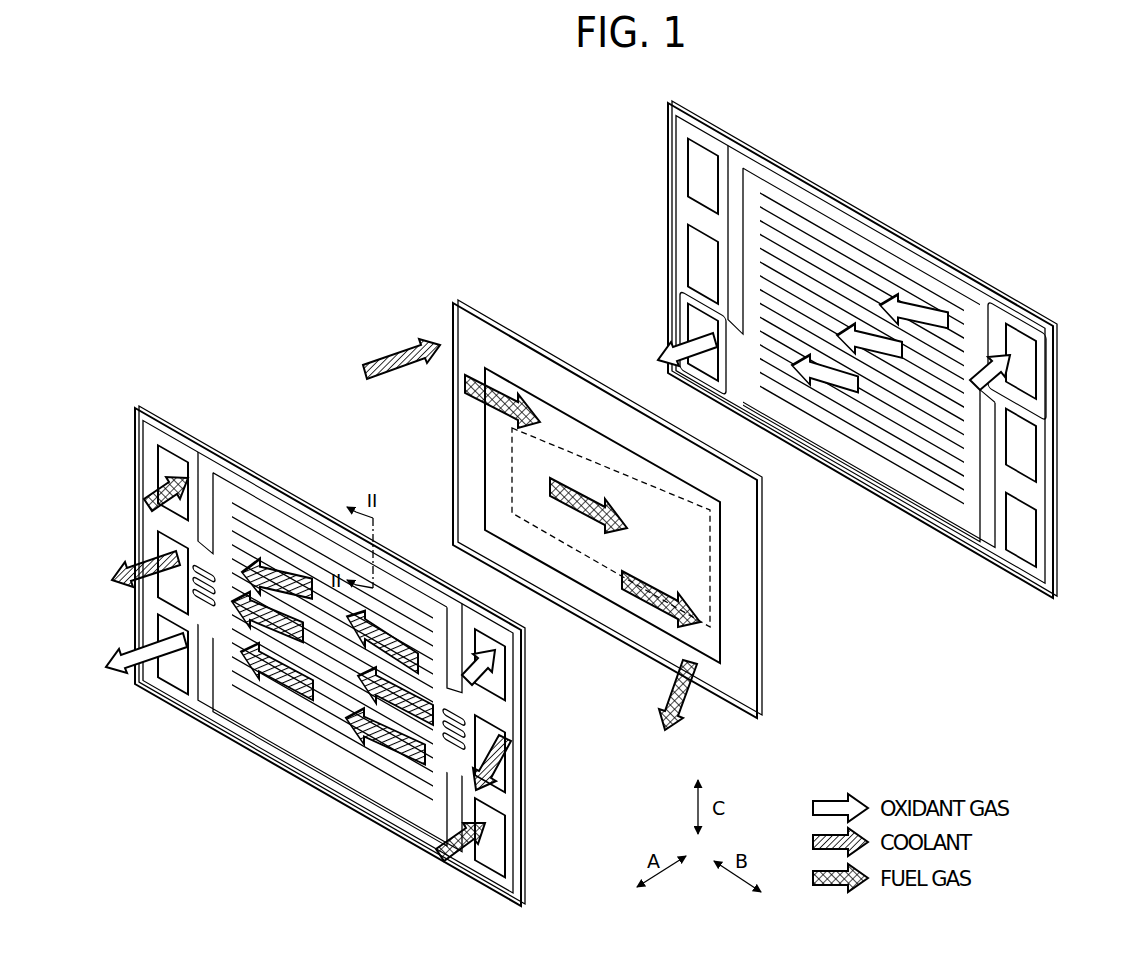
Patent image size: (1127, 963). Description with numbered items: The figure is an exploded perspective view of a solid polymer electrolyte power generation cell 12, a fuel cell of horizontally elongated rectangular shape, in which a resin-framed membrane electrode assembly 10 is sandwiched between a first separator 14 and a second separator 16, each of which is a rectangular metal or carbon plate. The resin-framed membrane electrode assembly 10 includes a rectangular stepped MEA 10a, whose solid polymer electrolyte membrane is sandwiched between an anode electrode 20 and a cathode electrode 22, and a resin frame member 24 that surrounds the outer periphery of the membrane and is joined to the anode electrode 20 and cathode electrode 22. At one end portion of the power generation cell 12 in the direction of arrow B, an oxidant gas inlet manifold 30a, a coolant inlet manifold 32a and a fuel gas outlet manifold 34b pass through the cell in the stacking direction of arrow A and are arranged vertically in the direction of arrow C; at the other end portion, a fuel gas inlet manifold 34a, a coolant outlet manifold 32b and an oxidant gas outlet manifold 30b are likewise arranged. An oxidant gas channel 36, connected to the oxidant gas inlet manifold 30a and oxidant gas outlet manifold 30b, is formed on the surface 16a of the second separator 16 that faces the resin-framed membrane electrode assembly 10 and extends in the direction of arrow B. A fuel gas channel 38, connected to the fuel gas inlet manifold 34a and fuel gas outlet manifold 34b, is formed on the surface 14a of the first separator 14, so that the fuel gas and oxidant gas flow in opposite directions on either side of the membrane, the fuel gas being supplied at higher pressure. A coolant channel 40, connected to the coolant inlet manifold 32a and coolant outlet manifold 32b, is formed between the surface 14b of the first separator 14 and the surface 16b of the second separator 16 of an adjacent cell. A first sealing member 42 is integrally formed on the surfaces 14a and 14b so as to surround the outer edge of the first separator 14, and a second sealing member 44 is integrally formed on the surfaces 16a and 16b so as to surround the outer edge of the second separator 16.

The resin-framed membrane electrode assembly 10 is at (448, 300).
The stepped MEA 10a is at (577, 570).
The power generation cell 12 is at (367, 229).
The first separator 14 is at (158, 405).
The surface of first separator 14a is at (155, 690).
The surface of first separator 14b is at (176, 692).
The second separator 16 is at (664, 114).
The surface of second separator 16a is at (1018, 565).
The surface of second separator 16b is at (1035, 578).
The anode electrode 20 is at (505, 490).
The cathode electrode 22 is at (578, 455).
The resin frame member 24 is at (507, 320).
The oxidant gas inlet manifold 30a is at (497, 690).
The oxidant gas outlet manifold 30b is at (160, 620).
The coolant inlet manifold 32a is at (492, 732).
The coolant outlet manifold 32b is at (160, 540).
The fuel gas inlet manifold 34a is at (160, 470).
The fuel gas outlet manifold 34b is at (497, 825).
The oxidant gas channel 36 is at (825, 248).
The fuel gas channel 38 is at (290, 525).
The coolant channel 40 is at (270, 700).
The first sealing member 42 is at (235, 465).
The second sealing member 44 is at (683, 288).